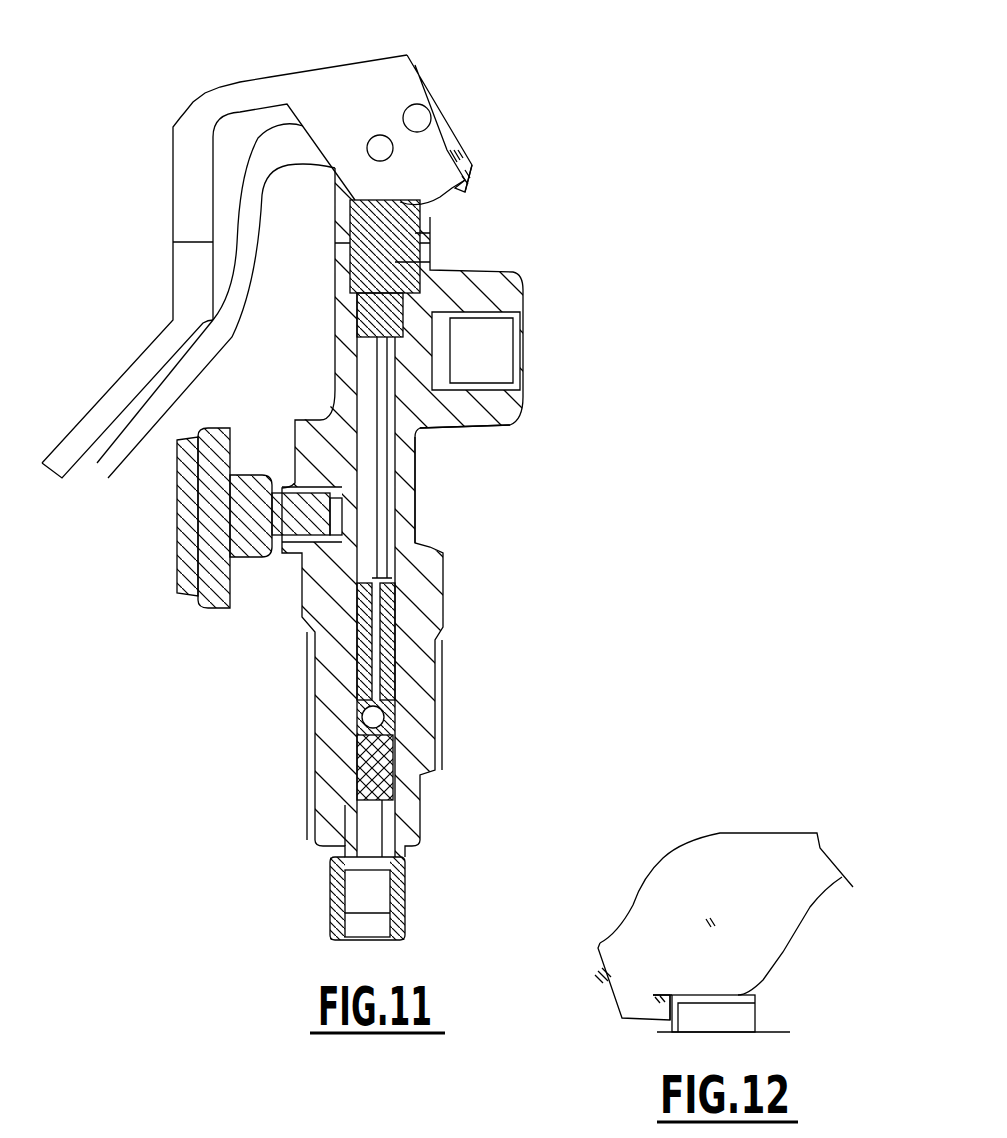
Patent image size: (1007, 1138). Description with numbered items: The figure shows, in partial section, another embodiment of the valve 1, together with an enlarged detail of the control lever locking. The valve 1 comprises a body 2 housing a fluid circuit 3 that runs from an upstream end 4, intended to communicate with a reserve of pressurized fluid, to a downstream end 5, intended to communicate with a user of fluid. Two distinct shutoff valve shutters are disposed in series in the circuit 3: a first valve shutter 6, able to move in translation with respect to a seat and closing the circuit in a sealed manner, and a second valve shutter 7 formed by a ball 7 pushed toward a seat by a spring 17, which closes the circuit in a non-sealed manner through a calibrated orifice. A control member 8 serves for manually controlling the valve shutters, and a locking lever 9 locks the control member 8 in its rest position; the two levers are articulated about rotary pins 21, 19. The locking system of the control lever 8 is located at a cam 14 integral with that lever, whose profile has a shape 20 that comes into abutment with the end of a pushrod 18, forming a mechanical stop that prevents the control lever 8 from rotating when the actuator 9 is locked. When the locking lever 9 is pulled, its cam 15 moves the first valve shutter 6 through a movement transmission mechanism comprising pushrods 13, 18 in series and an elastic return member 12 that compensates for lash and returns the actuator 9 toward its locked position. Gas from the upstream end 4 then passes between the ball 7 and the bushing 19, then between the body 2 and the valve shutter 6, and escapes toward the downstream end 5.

In FIG. 11, the valve 1 is at (562, 654).
In FIG. 11, the body 2 is at (302, 626).
In FIG. 11, the fluid circuit 3 is at (400, 517).
In FIG. 11, the upstream end 4 is at (340, 943).
In FIG. 11, the downstream end 5 is at (534, 363).
In FIG. 11, the first shutoff valve shutter 6 is at (393, 437).
In FIG. 11, the second valve shutter 7 is at (348, 762).
In FIG. 11, the control member 8 is at (102, 403).
In FIG. 12, the control member 8 is at (740, 862).
In FIG. 11, the locking lever 9 is at (120, 453).
In FIG. 11, the return member 12 is at (422, 266).
In FIG. 11, the pushrod 13 is at (413, 363).
In FIG. 11, the cam 14 is at (461, 158).
In FIG. 12, the cam 14 is at (605, 978).
In FIG. 11, the cam 15 is at (467, 190).
In FIG. 11, the spring 17 is at (340, 775).
In FIG. 12, the pushrod 18 is at (748, 1019).
In FIG. 11, the rotary pin 19 is at (420, 106).
In FIG. 12, the shape 20 is at (655, 1004).
In FIG. 11, the rotary pin 21 is at (372, 125).